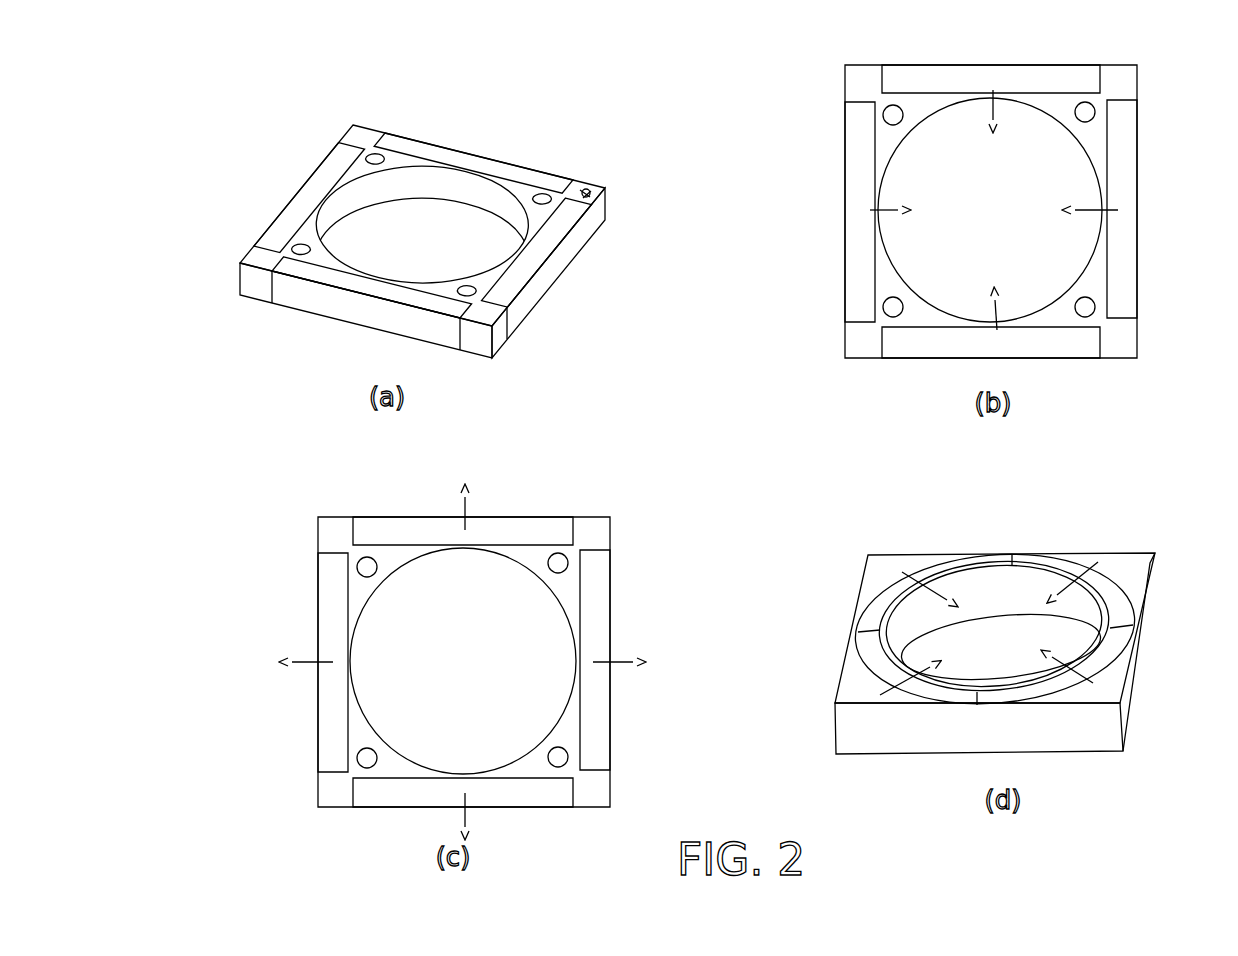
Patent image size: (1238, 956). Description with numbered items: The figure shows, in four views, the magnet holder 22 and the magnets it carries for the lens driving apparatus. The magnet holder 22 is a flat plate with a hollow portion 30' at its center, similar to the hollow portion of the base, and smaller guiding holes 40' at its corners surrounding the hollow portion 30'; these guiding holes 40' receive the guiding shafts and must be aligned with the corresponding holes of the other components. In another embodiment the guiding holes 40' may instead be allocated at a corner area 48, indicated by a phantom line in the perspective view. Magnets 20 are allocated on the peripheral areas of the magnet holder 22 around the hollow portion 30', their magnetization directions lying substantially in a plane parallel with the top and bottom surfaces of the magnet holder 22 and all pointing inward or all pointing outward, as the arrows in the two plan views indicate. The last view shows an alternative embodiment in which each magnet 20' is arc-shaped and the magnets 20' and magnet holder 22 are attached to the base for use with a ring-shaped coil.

The magnet 20 is at (714, 433).
The arc-shaped magnet 20' is at (1002, 610).
The magnet holder 22 is at (503, 347).
The hollow portion 30' is at (458, 240).
The guiding hole 40' is at (457, 253).
The corner area 48 is at (593, 183).